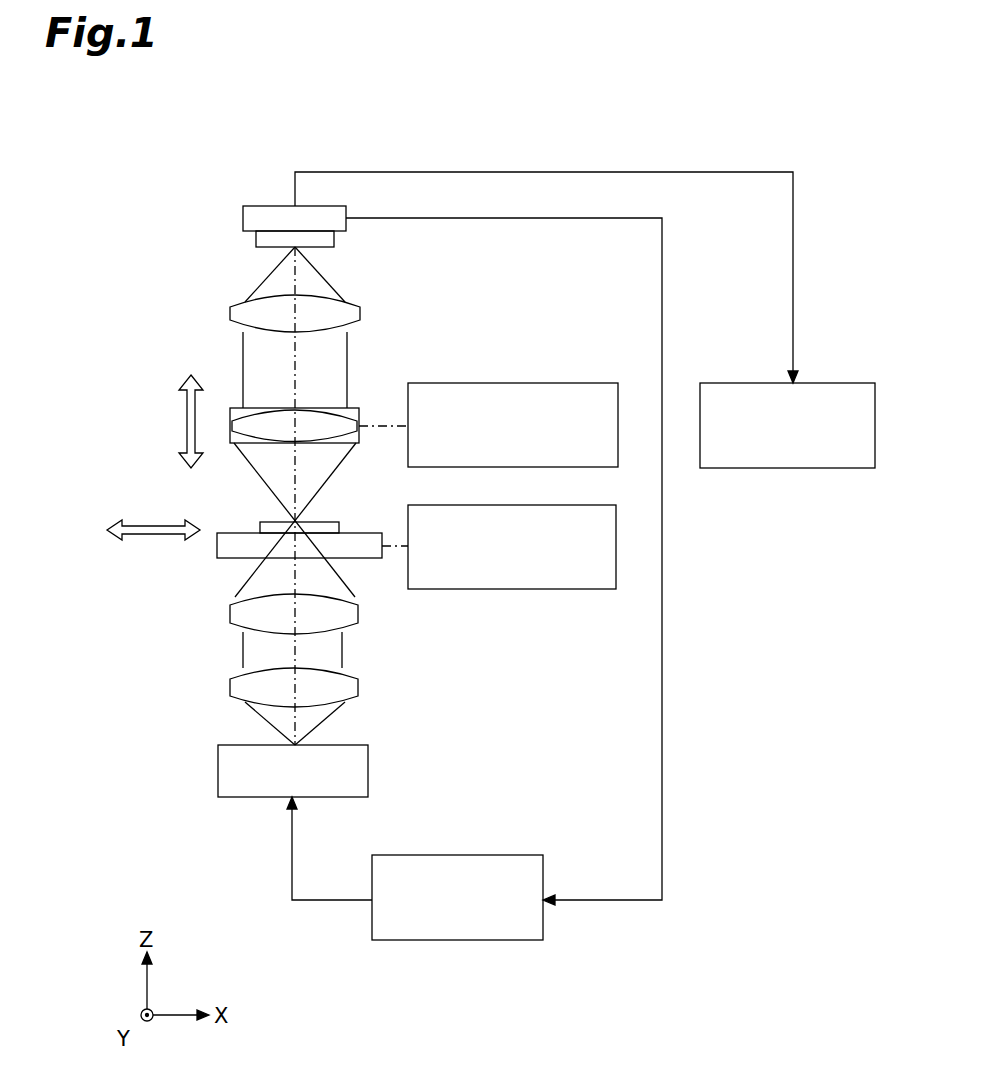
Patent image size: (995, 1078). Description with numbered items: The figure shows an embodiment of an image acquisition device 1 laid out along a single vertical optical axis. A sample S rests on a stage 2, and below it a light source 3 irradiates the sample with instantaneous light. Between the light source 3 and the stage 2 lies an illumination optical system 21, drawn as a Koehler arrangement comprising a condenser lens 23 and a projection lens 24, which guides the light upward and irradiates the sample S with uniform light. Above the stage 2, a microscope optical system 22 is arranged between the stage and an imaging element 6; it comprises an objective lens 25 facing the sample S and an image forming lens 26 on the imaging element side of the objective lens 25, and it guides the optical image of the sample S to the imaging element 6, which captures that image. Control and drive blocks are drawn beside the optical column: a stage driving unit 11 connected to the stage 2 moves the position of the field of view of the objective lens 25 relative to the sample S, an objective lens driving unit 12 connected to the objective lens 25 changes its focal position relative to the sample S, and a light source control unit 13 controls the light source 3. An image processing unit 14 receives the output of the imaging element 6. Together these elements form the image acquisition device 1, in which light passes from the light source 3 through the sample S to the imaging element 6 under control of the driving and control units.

The image acquisition device 1 is at (197, 175).
The stage 2 is at (218, 547).
The light source 3 is at (217, 772).
The imaging element 6 is at (272, 206).
The stage driving unit 11 is at (570, 589).
The objective lens driving unit 12 is at (570, 383).
The light source control unit 13 is at (517, 855).
The image processing unit 14 is at (850, 383).
The illumination optical system 21 is at (210, 650).
The microscope optical system 22 is at (212, 369).
The condenser lens 23 is at (229, 688).
The projection lens 24 is at (229, 612).
The objective lens 25 is at (231, 408).
The image forming lens 26 is at (230, 312).
The sample S is at (262, 522).